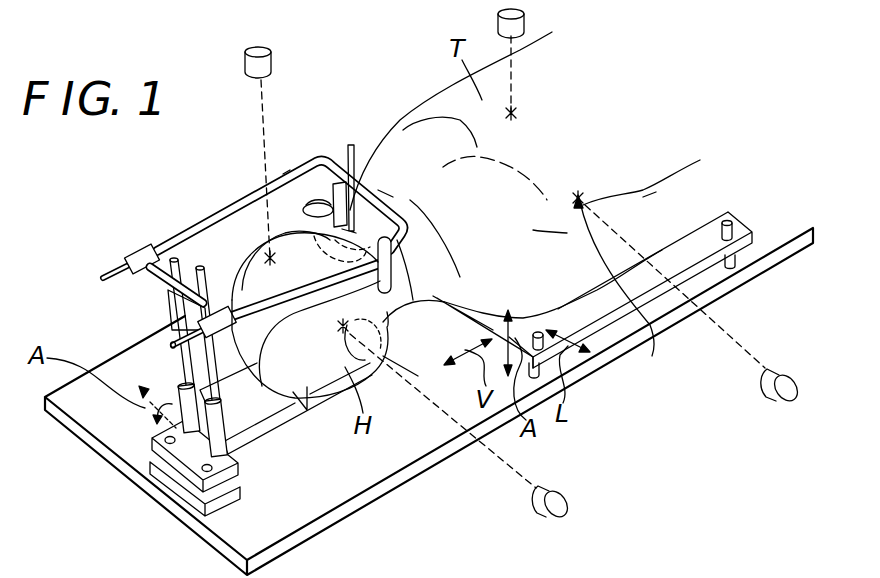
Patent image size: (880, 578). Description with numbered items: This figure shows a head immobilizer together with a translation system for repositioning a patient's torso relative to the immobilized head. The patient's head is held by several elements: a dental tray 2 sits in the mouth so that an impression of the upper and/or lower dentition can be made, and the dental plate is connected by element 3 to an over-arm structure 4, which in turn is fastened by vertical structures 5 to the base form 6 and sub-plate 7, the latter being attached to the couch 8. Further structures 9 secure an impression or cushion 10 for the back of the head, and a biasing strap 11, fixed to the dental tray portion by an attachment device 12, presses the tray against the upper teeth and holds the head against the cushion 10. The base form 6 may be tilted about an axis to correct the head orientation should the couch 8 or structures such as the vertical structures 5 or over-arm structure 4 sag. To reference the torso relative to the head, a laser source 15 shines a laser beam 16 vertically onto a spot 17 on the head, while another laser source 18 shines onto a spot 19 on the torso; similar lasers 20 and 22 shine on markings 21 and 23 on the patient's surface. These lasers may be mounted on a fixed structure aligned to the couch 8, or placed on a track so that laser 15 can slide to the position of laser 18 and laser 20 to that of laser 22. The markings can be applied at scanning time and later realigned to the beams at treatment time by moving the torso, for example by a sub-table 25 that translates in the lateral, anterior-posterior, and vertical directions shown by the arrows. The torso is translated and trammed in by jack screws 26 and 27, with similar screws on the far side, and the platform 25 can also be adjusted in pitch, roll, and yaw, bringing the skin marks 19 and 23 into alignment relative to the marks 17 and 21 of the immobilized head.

The dental tray 2 is at (338, 188).
The connecting element 3 is at (352, 173).
The over-arm structure 4 is at (283, 174).
The vertical structures 5 is at (172, 358).
The base form 6 is at (152, 438).
The sub-plate 7 is at (157, 470).
The couch 8 is at (187, 514).
The securing structures 9 is at (260, 428).
The cushion 10 is at (326, 398).
The biasing strap 11 is at (245, 283).
The attachment device 12 is at (314, 202).
The laser source 15 is at (256, 48).
The laser beam 16 is at (260, 107).
The spot on head 17 is at (268, 258).
The laser source 18 is at (494, 15).
The spot on torso 19 is at (513, 110).
The laser 20 is at (533, 507).
The marking 21 is at (368, 357).
The laser 22 is at (792, 372).
The marking 23 is at (618, 288).
The sub-table 25 is at (598, 318).
The jack screw 26 is at (535, 332).
The jack screw 27 is at (740, 222).